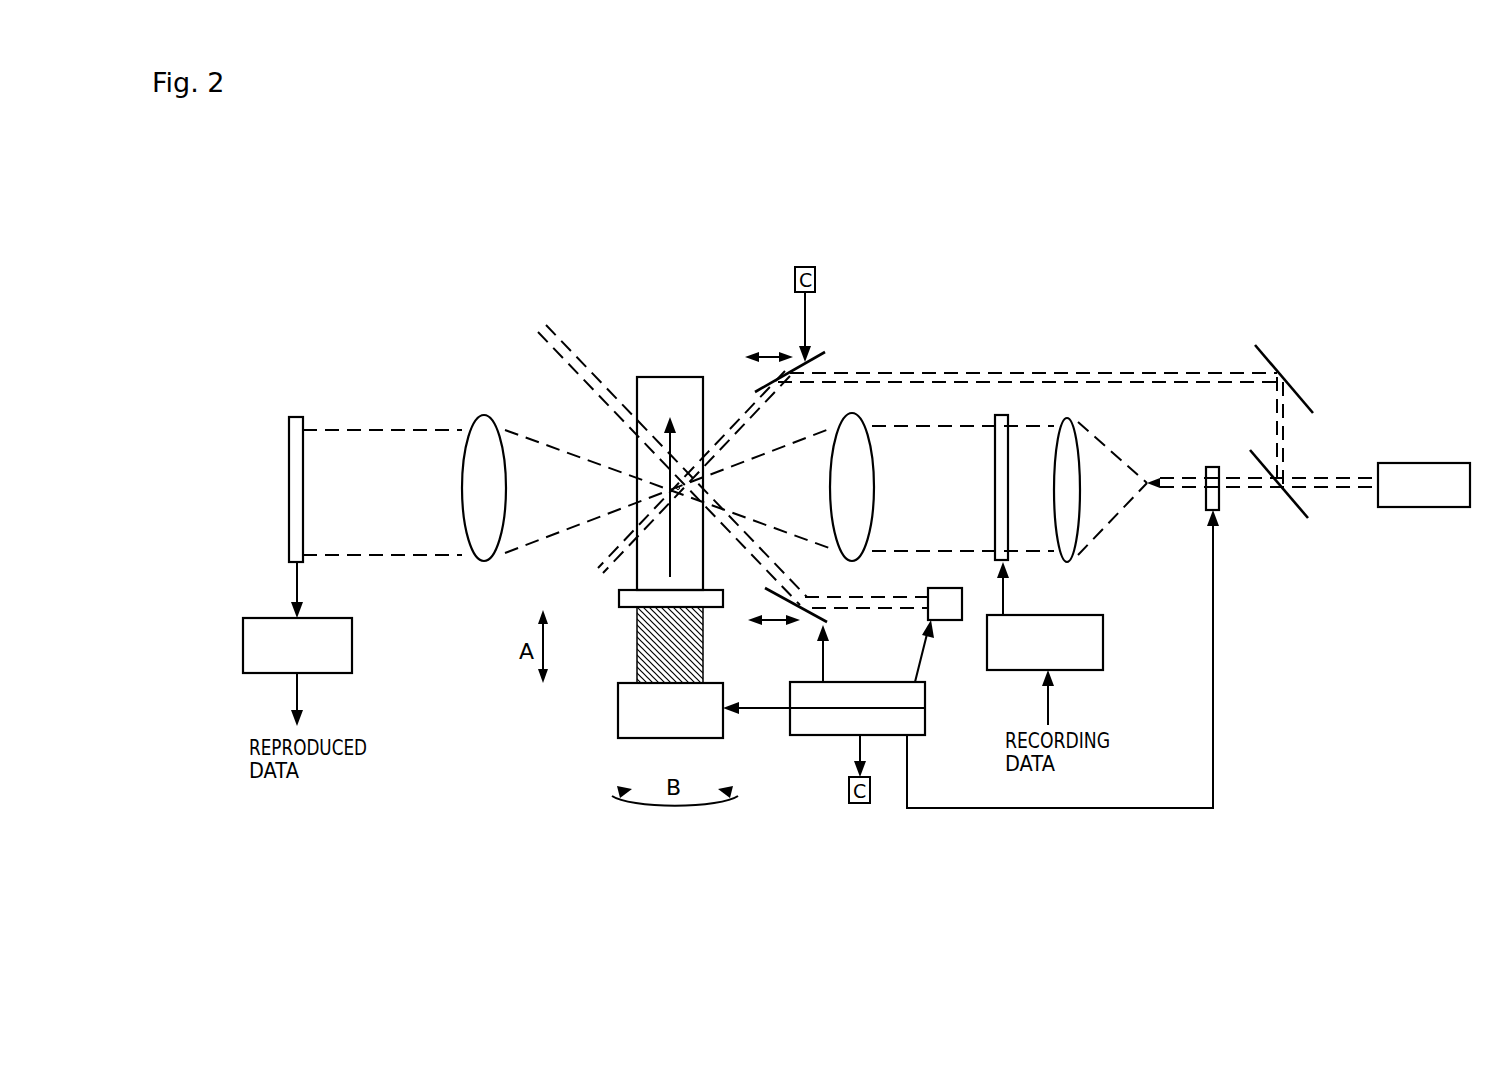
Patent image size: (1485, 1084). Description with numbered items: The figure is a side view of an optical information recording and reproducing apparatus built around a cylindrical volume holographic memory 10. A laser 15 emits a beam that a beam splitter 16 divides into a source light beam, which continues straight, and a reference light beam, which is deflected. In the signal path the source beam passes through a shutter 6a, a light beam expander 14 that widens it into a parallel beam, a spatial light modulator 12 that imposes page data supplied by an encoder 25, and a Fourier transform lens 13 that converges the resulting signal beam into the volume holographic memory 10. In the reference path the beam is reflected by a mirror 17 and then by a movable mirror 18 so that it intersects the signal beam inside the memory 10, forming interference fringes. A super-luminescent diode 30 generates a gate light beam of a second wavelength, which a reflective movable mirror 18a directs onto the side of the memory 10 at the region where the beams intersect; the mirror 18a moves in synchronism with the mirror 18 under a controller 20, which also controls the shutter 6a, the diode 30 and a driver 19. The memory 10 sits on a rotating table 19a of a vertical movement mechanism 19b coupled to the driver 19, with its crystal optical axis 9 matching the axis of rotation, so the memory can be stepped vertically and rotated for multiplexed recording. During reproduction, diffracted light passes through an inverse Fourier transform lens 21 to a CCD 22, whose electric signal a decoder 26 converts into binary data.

The CCD 22 is at (296, 417).
The inverse Fourier transform lens 21 is at (484, 415).
The volume holographic memory 10 is at (678, 377).
The crystal optical axis 9 is at (678, 488).
The Fourier transform lens 13 is at (840, 428).
The spatial light modulator 12 is at (1002, 415).
The light beam expander 14 is at (1112, 492).
The shutter 6a is at (1212, 467).
The beam splitter 16 is at (1292, 506).
The mirror 17 is at (1296, 386).
The laser 15 is at (1425, 507).
The movable mirror 18 is at (823, 352).
The reflective movable mirror 18a is at (830, 622).
The super-luminescent diode 30 is at (957, 620).
The rotating table 19a is at (618, 603).
The vertical movement mechanism 19b is at (640, 652).
The driver 19 is at (618, 712).
The controller 20 is at (820, 735).
The encoder 25 is at (1104, 640).
The decoder 26 is at (352, 645).